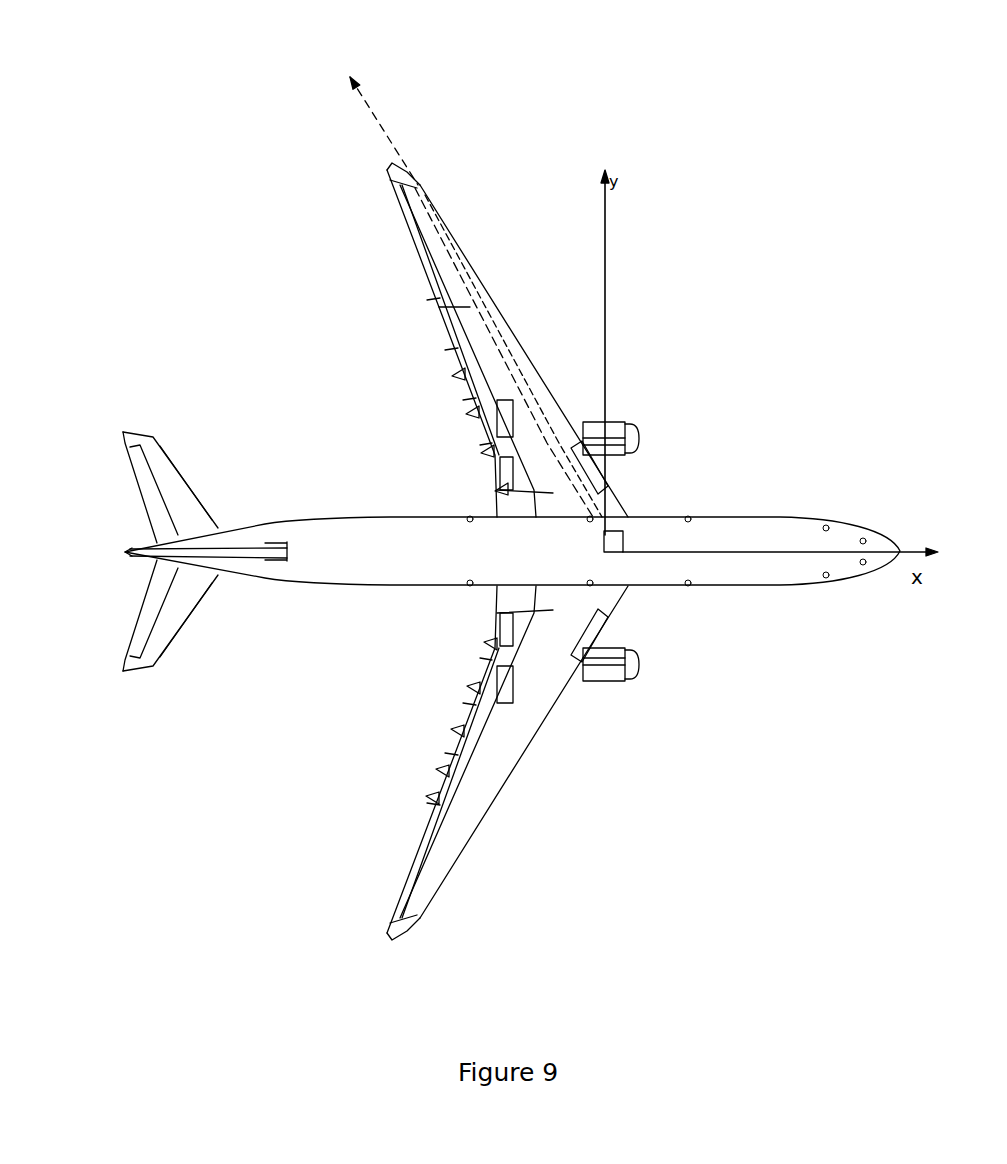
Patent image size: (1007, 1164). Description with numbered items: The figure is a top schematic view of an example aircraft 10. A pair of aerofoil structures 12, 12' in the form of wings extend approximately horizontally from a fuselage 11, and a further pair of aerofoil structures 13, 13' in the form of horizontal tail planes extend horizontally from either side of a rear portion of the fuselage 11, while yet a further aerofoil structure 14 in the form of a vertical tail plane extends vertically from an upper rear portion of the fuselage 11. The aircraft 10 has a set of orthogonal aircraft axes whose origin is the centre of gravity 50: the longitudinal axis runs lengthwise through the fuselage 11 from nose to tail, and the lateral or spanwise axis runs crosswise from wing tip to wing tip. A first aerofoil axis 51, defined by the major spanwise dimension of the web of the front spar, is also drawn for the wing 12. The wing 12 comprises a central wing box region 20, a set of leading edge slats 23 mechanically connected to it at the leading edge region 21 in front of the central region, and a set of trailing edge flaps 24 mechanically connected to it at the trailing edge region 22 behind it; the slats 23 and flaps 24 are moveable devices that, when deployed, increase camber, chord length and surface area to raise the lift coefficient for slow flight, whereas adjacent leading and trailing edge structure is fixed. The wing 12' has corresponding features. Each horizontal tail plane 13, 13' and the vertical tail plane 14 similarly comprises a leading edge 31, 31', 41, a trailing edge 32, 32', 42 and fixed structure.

The aircraft 10 is at (788, 86).
The fuselage 11 is at (707, 555).
The aerofoil structure 12 is at (507, 340).
The aerofoil structure 12' is at (515, 763).
The aerofoil structure 13 is at (219, 487).
The aerofoil structure 13' is at (160, 700).
The aerofoil structure 14 is at (293, 540).
The central region 20 is at (530, 409).
The leading edge region 21 is at (533, 365).
The trailing edge region 22 is at (463, 360).
The leading edge slats 23 is at (540, 407).
The trailing edge flaps 24 is at (458, 322).
The leading edge 31 is at (221, 440).
The leading edge 31' is at (231, 670).
The trailing edge 32 is at (138, 427).
The trailing edge 32' is at (116, 613).
The leading edge 41 is at (287, 560).
The trailing edge 42 is at (150, 547).
The centre of gravity 50 is at (627, 533).
The first aerofoil axis 51 is at (383, 138).